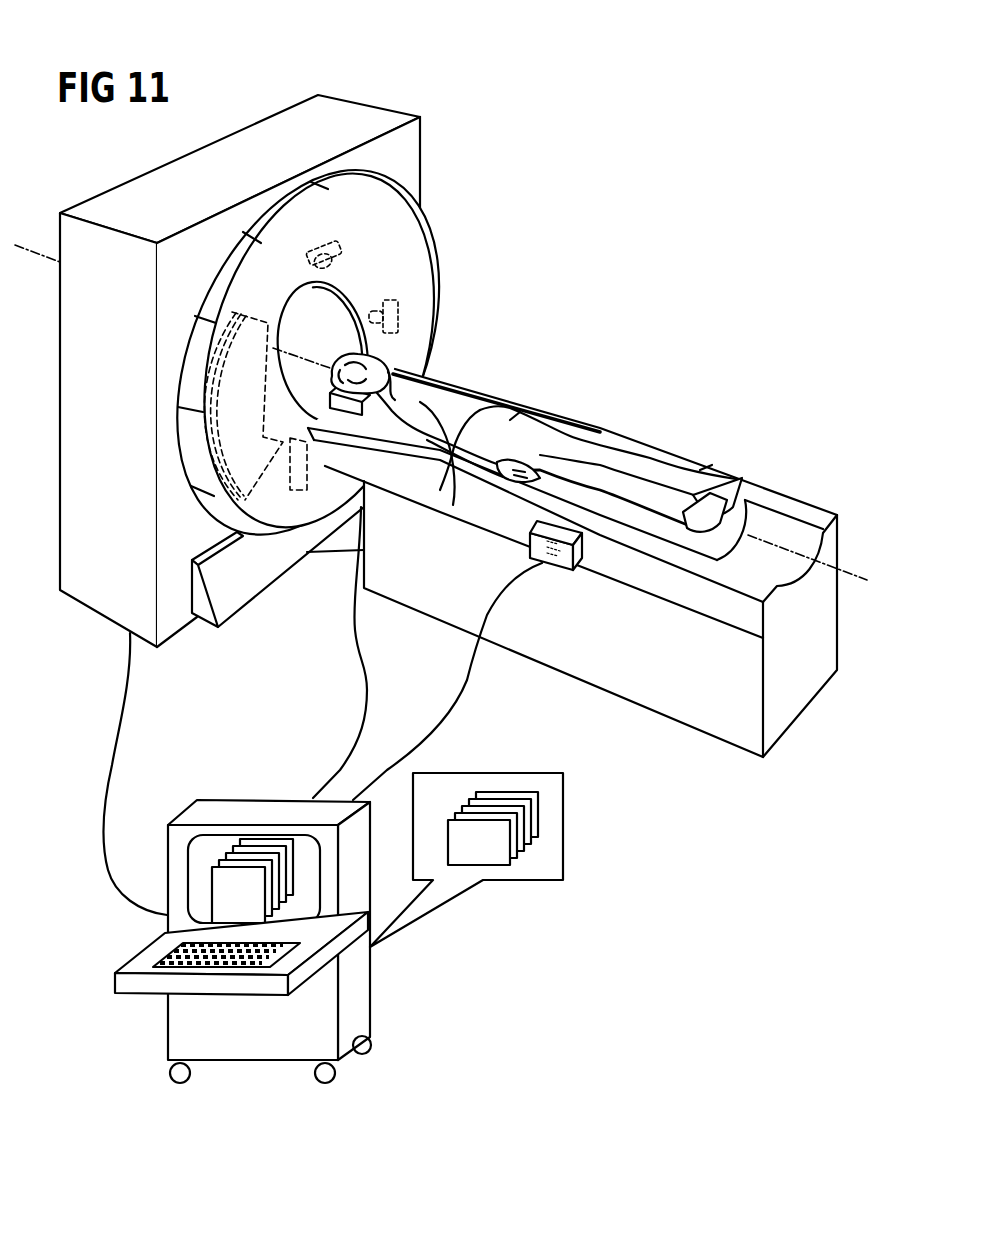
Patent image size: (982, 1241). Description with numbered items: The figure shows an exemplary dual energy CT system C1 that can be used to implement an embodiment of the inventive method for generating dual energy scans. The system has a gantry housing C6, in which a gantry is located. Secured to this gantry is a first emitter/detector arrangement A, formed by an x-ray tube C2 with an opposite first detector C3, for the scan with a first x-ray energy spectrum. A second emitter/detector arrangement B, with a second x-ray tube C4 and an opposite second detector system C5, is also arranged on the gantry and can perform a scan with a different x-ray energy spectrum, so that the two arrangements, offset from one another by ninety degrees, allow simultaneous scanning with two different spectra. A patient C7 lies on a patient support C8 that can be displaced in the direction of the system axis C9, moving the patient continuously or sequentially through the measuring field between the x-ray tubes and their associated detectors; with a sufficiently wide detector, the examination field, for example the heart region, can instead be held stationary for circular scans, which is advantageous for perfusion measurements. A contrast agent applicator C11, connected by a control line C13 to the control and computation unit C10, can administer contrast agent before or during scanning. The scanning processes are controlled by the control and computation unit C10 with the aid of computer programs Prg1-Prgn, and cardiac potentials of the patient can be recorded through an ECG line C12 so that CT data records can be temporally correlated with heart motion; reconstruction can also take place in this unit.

The first emitter/detector arrangement A is at (312, 72).
The second emitter/detector arrangement B is at (496, 316).
The dual energy CT system C1 is at (612, 272).
The x-ray tube C2 is at (342, 243).
The first detector C3 is at (307, 473).
The second x-ray tube C4 is at (398, 316).
The second detector system C5 is at (253, 473).
The gantry housing C6 is at (110, 602).
The patient C7 is at (580, 438).
The patient support C8 is at (718, 703).
The system axis C9 is at (865, 580).
The control and computation unit C10 is at (357, 998).
The contrast agent applicator C11 is at (560, 573).
The ECG line C12 is at (367, 680).
The control line C13 is at (470, 680).
The computer programs Prg1-Prgn is at (493, 865).